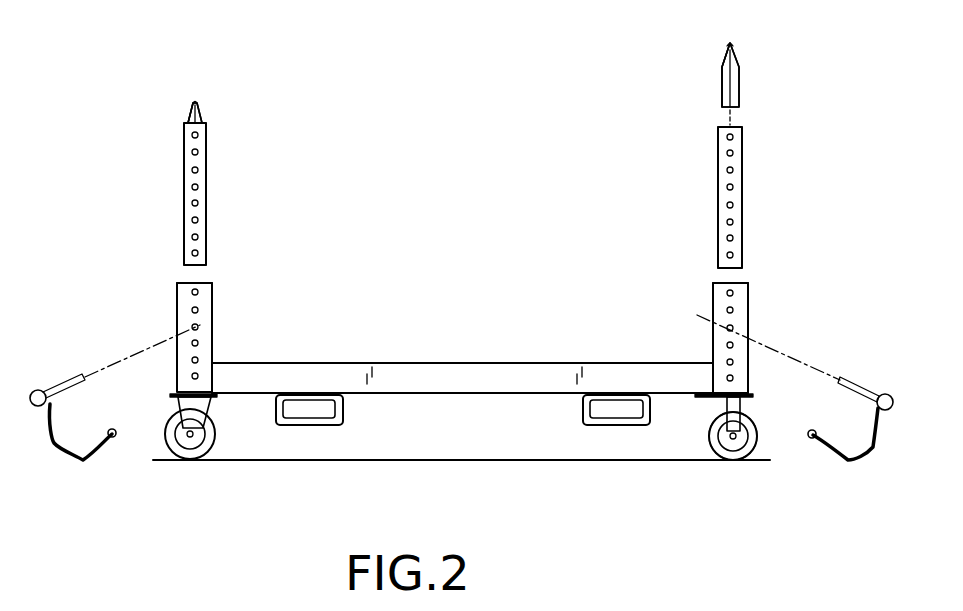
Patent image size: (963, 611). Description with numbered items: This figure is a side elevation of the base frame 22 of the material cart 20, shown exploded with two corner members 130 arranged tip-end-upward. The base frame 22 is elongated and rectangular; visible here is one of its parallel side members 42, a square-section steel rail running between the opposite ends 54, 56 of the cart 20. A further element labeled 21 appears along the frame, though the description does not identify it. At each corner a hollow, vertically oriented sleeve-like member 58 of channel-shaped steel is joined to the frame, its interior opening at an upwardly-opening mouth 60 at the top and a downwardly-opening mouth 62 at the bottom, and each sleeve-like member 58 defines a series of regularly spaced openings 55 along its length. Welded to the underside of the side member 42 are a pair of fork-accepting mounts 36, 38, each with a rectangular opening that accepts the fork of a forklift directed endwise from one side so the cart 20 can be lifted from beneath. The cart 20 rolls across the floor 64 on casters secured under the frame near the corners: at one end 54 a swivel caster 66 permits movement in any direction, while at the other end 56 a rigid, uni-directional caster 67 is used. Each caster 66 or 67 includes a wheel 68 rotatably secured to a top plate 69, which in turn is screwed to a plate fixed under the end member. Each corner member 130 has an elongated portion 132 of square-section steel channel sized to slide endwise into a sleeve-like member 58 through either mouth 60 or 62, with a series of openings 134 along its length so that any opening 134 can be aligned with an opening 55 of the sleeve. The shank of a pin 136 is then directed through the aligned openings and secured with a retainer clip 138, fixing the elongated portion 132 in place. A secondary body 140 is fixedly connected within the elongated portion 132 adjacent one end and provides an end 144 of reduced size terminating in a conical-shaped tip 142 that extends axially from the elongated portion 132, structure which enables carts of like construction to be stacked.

The material cart 20 is at (823, 218).
The frame 21 is at (453, 395).
The base frame 22 is at (422, 363).
The fork-accepting mount 36 is at (318, 426).
The fork-accepting mount 38 is at (607, 426).
The side member 42 is at (573, 363).
The end of cart 54 is at (173, 358).
The openings 55 is at (198, 310).
The end of cart 56 is at (748, 367).
The sleeve-like member 58 is at (177, 300).
The upwardly-opening mouth 60 is at (200, 283).
The downwardly-opening mouth 62 is at (185, 398).
The floor 64 is at (415, 460).
The swivel caster 66 is at (216, 450).
The rigid caster 67 is at (710, 445).
The wheel 68 is at (168, 455).
The top plate 69 is at (230, 393).
The corner member 130 is at (208, 165).
The elongated portion 132 is at (183, 175).
The openings 134 is at (197, 187).
The pin 136 is at (77, 377).
The retainer clip 138 is at (65, 457).
The secondary body 140 is at (205, 125).
The conical-shaped tip 142 is at (188, 123).
The end of reduced size 144 is at (190, 120).